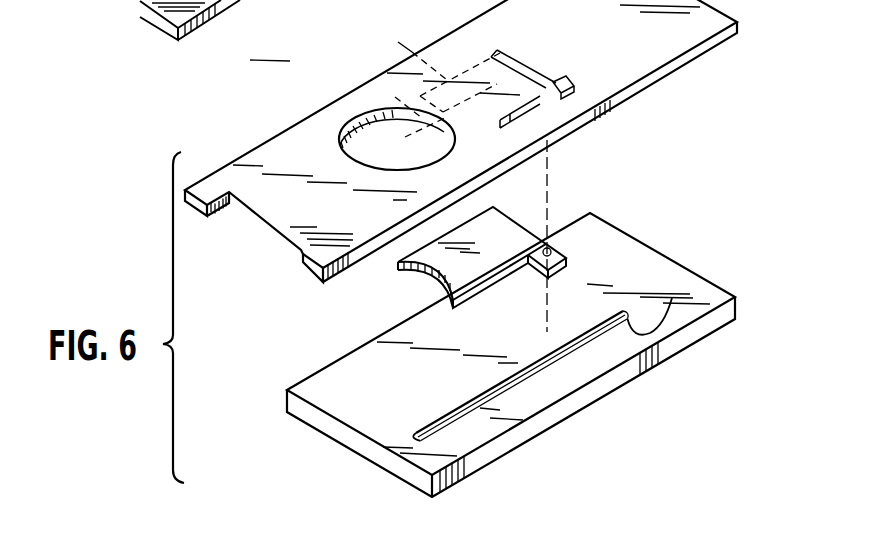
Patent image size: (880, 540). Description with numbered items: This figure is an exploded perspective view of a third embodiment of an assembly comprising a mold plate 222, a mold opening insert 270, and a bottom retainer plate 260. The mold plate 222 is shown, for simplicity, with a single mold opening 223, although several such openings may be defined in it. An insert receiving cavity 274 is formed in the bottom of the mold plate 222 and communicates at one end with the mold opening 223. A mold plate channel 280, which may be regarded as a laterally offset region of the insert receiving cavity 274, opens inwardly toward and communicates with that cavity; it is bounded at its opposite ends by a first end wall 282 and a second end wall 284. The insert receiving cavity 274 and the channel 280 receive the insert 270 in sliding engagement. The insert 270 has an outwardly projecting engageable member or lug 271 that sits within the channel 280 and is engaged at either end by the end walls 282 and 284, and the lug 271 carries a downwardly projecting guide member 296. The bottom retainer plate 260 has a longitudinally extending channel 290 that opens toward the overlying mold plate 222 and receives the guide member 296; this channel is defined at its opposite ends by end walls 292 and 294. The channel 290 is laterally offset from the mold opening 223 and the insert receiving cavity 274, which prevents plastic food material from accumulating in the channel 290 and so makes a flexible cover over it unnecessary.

The mold plate 222 is at (680, 70).
The mold opening 223 is at (370, 116).
The insert receiving cavity 274 is at (411, 129).
The first end wall 282 is at (396, 50).
The mold plate channel 280 is at (547, 110).
The second end wall 284 is at (547, 80).
The insert 270 is at (507, 222).
The lug 271 is at (560, 248).
The guide member 296 is at (560, 268).
The bottom retainer plate 260 is at (672, 348).
The channel 290 is at (560, 400).
The end wall 292 is at (417, 432).
The end wall 294 is at (643, 331).